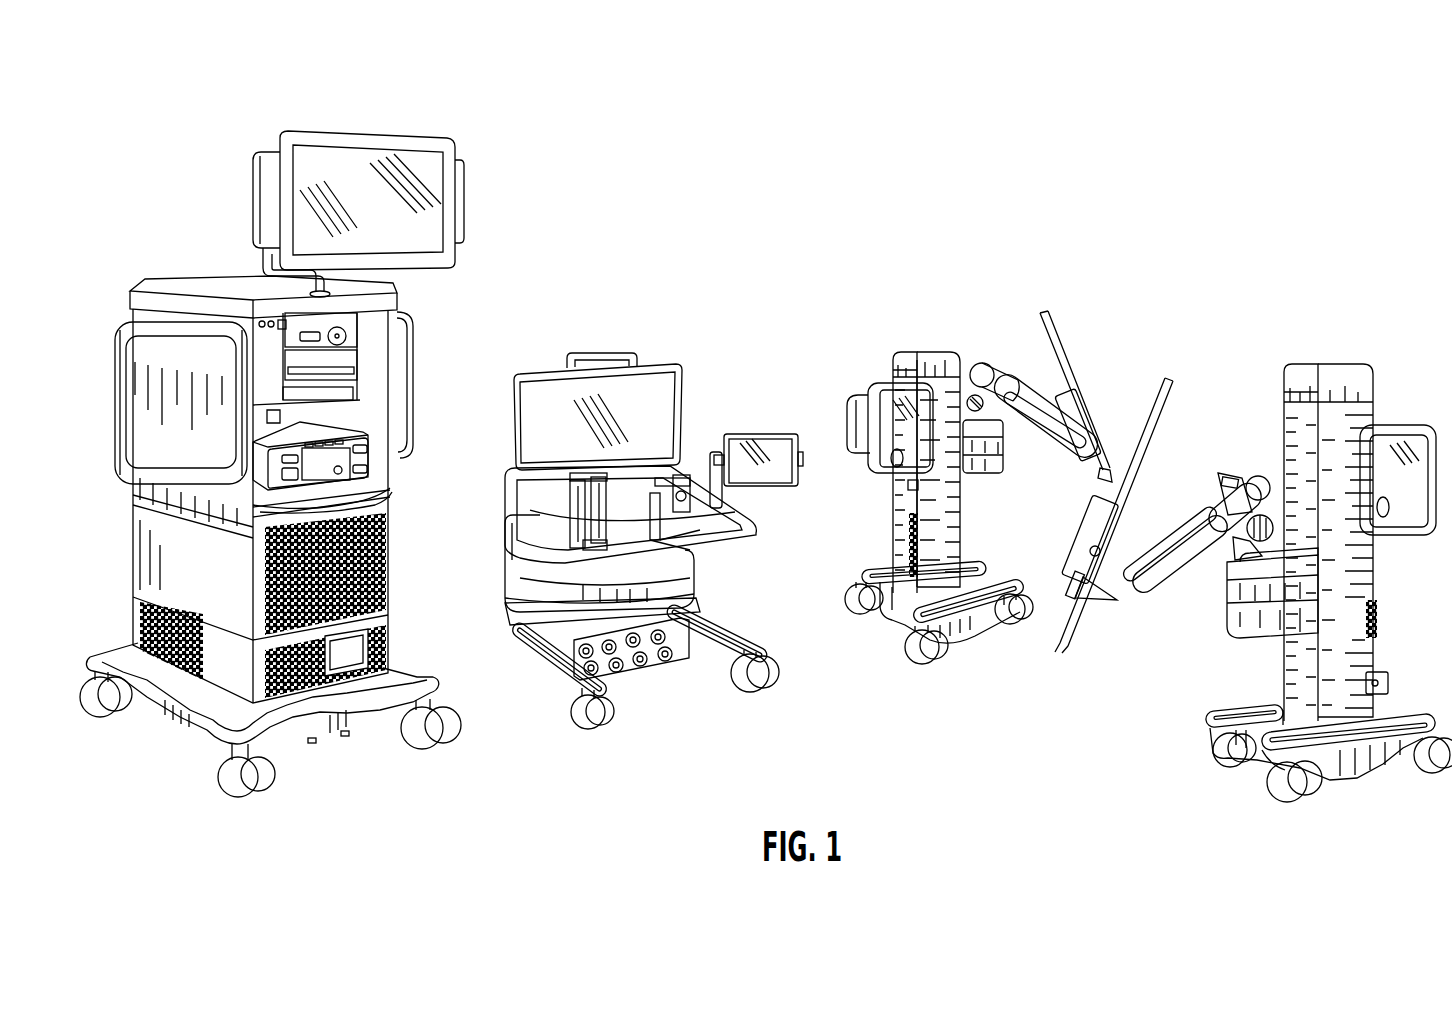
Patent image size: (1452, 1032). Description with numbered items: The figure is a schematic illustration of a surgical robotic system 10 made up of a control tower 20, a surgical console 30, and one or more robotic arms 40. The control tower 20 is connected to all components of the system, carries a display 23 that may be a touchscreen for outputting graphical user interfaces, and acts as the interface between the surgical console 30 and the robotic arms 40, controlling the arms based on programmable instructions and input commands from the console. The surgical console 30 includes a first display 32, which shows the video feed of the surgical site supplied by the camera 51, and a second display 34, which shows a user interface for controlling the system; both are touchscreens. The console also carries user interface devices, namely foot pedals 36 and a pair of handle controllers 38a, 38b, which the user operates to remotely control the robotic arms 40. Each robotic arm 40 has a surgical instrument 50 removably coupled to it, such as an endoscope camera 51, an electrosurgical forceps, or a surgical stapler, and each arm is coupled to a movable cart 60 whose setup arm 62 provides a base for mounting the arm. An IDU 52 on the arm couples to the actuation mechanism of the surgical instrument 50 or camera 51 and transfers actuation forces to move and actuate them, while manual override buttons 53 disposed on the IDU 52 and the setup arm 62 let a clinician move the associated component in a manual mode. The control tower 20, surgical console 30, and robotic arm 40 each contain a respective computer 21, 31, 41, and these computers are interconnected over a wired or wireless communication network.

The surgical robotic system 10 is at (184, 127).
The control tower 20 is at (160, 550).
The computer 21 is at (370, 562).
The display 23 is at (448, 178).
The surgical console 30 is at (702, 422).
The computer 31 is at (507, 581).
The first display 32 is at (658, 362).
The second display 34 is at (759, 434).
The foot pedals 36 is at (644, 675).
The handle controller 38a is at (584, 484).
The handle controller 38b is at (693, 481).
The robotic arm 40 is at (1022, 370).
The computer 41 is at (950, 540).
The surgical instrument 50 is at (1080, 632).
The camera 51 is at (1103, 473).
The IDU 52 is at (1098, 520).
The manual override buttons 53 is at (1093, 555).
The movable cart 60 is at (935, 351).
The setup arm 62 is at (1274, 641).